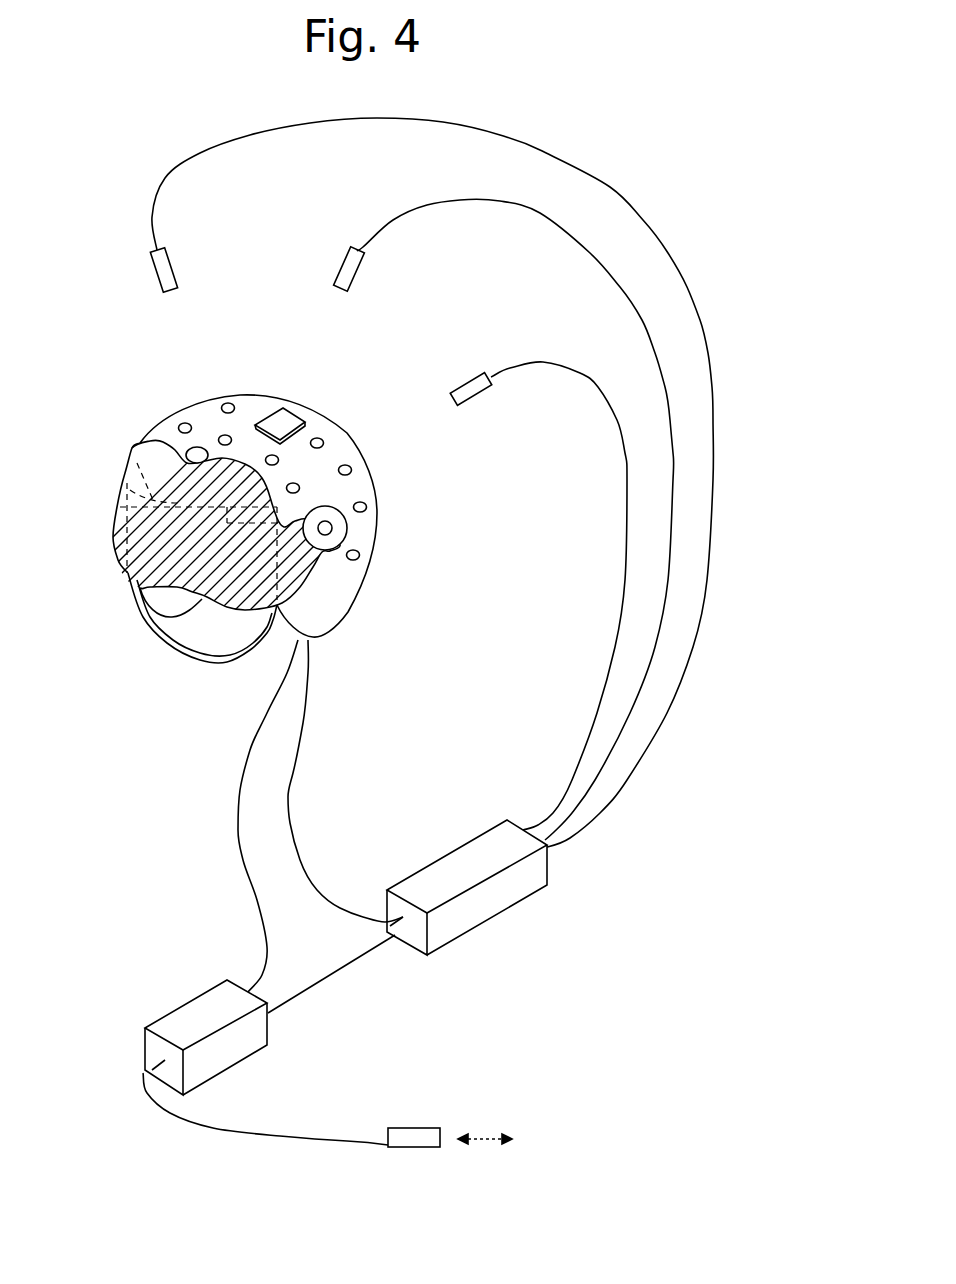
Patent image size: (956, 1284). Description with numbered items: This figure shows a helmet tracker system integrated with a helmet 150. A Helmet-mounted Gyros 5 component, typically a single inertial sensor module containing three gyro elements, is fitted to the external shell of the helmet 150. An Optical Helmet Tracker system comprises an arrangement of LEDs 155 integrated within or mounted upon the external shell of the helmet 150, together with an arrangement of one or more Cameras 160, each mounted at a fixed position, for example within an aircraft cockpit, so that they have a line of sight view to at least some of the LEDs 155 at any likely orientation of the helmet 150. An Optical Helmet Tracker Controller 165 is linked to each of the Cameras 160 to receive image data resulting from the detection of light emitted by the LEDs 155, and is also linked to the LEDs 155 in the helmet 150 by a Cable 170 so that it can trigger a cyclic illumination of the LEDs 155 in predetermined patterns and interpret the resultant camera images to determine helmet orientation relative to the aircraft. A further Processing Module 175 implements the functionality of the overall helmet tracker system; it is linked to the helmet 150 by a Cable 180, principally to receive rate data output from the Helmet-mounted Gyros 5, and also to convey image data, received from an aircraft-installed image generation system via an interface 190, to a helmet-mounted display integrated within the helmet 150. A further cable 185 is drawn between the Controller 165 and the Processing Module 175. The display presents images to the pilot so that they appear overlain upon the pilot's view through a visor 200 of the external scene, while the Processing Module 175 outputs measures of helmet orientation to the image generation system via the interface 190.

The Helmet-mounted Gyros 5 is at (274, 415).
The helmet 150 is at (353, 608).
The LEDs 155 is at (222, 401).
The Cameras 160 is at (150, 276).
The Optical Helmet Tracker Controller 165 is at (473, 930).
The Cable 170 is at (289, 787).
The Processing Module 175 is at (167, 1013).
The Cable 180 is at (238, 797).
The cable 185 is at (323, 982).
The interface 190 is at (420, 1128).
The visor 200 is at (158, 543).